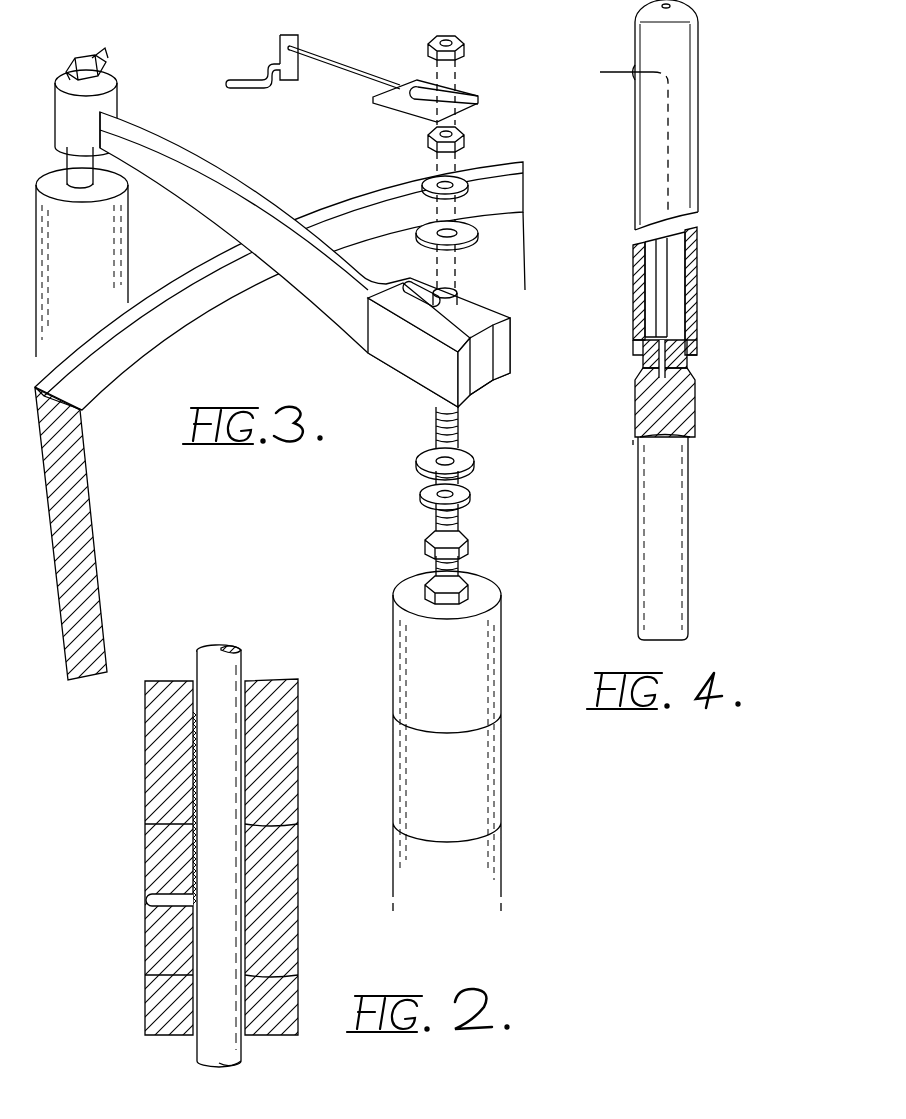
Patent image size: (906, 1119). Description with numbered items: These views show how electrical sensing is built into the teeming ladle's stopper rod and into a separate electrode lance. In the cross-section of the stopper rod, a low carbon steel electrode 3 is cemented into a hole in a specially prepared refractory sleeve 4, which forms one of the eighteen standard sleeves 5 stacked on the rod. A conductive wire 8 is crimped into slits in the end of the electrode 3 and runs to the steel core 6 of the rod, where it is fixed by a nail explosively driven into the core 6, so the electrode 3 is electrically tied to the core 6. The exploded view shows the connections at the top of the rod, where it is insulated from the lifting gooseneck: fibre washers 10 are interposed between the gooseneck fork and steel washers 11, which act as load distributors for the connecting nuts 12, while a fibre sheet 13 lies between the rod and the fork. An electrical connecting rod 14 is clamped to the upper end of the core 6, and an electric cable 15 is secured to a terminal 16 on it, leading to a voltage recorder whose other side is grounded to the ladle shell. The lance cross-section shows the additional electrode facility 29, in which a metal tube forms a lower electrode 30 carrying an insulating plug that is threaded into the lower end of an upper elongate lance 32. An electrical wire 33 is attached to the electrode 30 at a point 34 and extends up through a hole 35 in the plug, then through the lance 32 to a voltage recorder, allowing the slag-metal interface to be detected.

In FIG. 2, the electrode 3 is at (169, 904).
In FIG. 2, the refractory sleeve 4 is at (279, 869).
In FIG. 3, the standard sleeves 5 is at (490, 680).
In FIG. 2, the standard sleeves 5 is at (278, 721).
In FIG. 2, the steel core 6 is at (226, 674).
In FIG. 2, the conductive wire 8 is at (192, 853).
In FIG. 3, the fibre washers 10 is at (478, 235).
In FIG. 3, the steel washers 11 is at (422, 187).
In FIG. 3, the connecting nuts 12 is at (429, 140).
In FIG. 3, the fibre sheet 13 is at (370, 310).
In FIG. 3, the electrical connecting rod 14 is at (367, 76).
In FIG. 3, the electric cable 15 is at (245, 90).
In FIG. 3, the terminal 16 is at (295, 80).
In FIG. 4, the additional electrode facility 29 is at (628, 449).
In FIG. 4, the lower electrode tube 30 is at (638, 547).
In FIG. 4, the upper elongate lance 32 is at (693, 278).
In FIG. 4, the electrical wire 33 is at (603, 70).
In FIG. 4, the attachment point 34 is at (657, 413).
In FIG. 4, the hole 35 is at (693, 350).